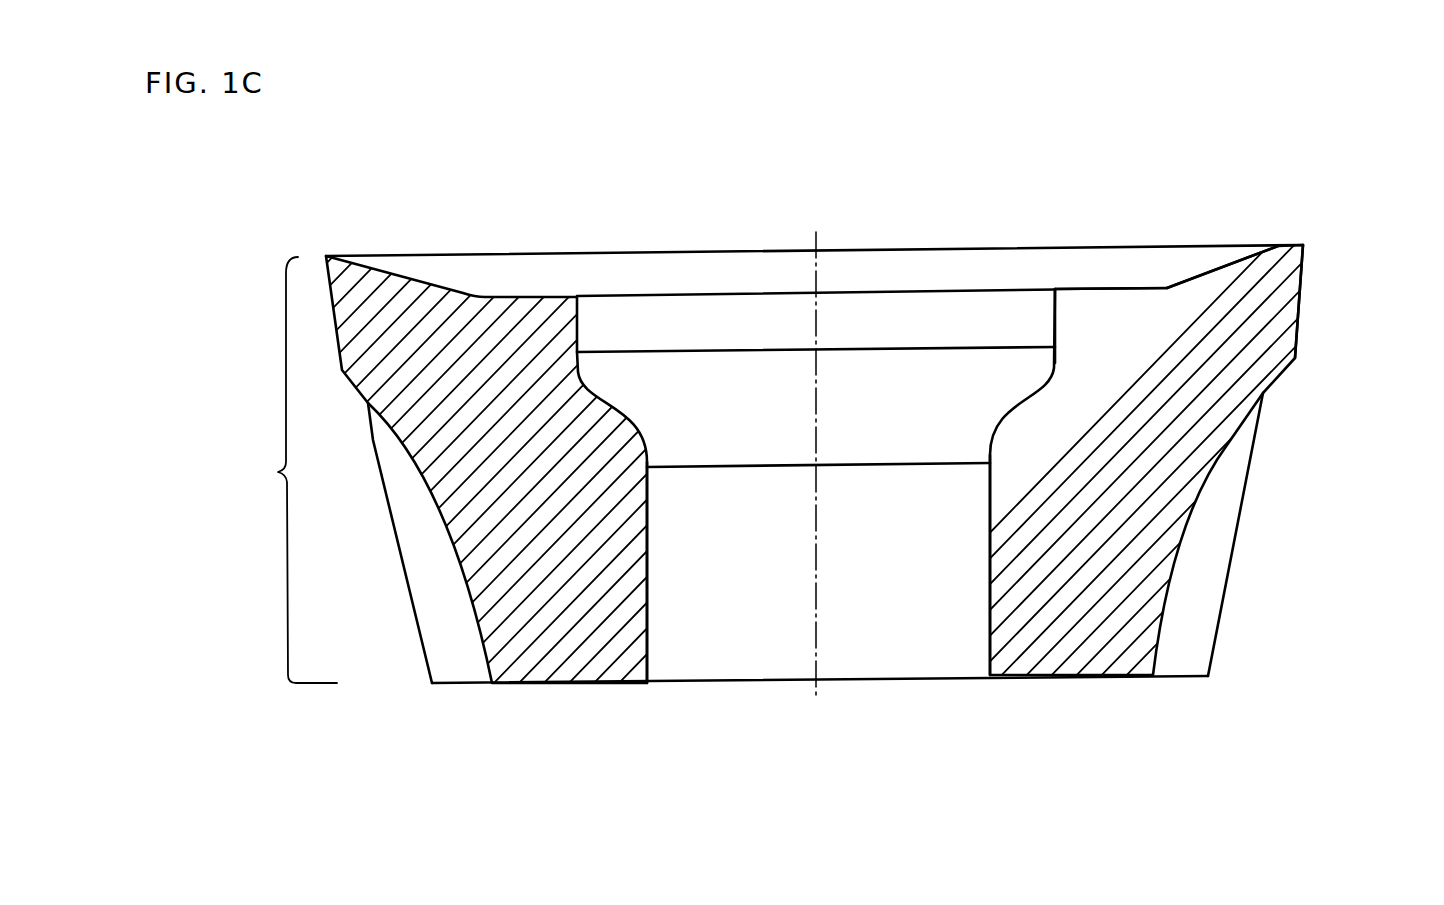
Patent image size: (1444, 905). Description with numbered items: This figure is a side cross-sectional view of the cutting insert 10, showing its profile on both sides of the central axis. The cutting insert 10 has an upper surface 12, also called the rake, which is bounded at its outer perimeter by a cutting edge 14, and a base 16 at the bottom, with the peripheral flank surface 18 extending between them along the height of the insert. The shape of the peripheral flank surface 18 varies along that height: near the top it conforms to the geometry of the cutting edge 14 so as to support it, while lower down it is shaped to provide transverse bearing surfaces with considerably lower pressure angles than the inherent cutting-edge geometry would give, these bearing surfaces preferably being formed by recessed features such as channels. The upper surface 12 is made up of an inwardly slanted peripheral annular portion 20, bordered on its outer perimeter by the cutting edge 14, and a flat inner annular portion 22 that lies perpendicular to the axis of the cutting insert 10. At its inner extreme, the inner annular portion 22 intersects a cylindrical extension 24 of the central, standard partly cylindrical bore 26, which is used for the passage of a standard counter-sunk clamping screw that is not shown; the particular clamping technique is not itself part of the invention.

The cutting insert 10 is at (1374, 117).
The upper surface 12 is at (1078, 265).
The cutting edge 14 is at (1300, 243).
The base 16 is at (1107, 633).
The peripheral flank surface 18 is at (277, 470).
The peripheral annular portion 20 is at (1213, 273).
The inner annular portion 22 is at (1135, 287).
The cylindrical extension 24 is at (1050, 317).
The partly cylindrical bore 26 is at (985, 488).